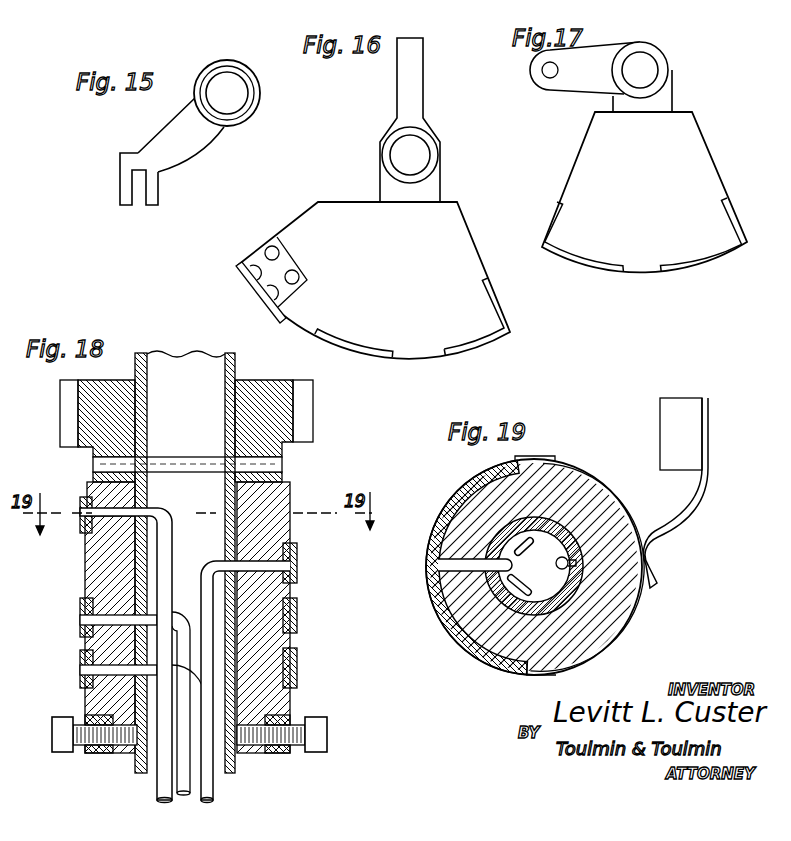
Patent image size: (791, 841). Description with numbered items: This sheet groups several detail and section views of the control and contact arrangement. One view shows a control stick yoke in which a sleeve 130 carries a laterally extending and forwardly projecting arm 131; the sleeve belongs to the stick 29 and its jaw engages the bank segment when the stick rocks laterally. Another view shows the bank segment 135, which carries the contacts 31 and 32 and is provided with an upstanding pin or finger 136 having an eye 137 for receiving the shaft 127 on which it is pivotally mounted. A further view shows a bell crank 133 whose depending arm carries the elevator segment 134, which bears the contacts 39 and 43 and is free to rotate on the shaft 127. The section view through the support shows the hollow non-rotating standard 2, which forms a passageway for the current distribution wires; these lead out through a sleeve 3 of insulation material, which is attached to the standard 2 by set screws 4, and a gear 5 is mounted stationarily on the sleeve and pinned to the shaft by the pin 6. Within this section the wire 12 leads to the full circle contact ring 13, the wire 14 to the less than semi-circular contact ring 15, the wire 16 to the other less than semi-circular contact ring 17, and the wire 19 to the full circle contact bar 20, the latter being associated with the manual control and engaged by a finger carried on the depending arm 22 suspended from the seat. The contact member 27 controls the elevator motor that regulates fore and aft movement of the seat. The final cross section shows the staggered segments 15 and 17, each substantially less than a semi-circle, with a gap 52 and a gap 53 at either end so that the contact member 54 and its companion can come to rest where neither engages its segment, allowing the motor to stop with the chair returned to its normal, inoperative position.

In FIG. 18, the standard 2 is at (150, 360).
In FIG. 19, the standard 2 is at (561, 594).
In FIG. 18, the sleeve 3 is at (280, 590).
In FIG. 19, the sleeve 3 is at (613, 604).
In FIG. 18, the set screws 4 is at (52, 735).
In FIG. 18, the gear 5 is at (305, 414).
In FIG. 18, the pin 6 is at (284, 464).
In FIG. 18, the wire 12 is at (80, 621).
In FIG. 19, the wire 12 is at (520, 548).
In FIG. 18, the full circle contact ring 13 is at (80, 605).
In FIG. 18, the wire 14 is at (216, 560).
In FIG. 19, the wire 14 is at (562, 563).
In FIG. 18, the less than semi-circular contact ring 15 is at (298, 564).
In FIG. 19, the less than semi-circular contact ring 15 is at (617, 645).
In FIG. 18, the wire 16 is at (156, 508).
In FIG. 19, the wire 16 is at (437, 566).
In FIG. 18, the less than semi-circular contact ring 17 is at (88, 496).
In FIG. 19, the less than semi-circular contact ring 17 is at (445, 541).
In FIG. 18, the wire 19 is at (80, 670).
In FIG. 19, the wire 19 is at (512, 565).
In FIG. 18, the full circle contact bar 20 is at (80, 688).
In FIG. 19, the depending arm 22 is at (696, 404).
In FIG. 16, the contact member 27 is at (278, 324).
In FIG. 15, the stick 29 is at (244, 93).
In FIG. 16, the contact 31 is at (383, 330).
In FIG. 16, the contact 32 is at (472, 345).
In FIG. 17, the contact 39 is at (588, 266).
In FIG. 17, the contact 43 is at (704, 259).
In FIG. 19, the gap 52 is at (545, 457).
In FIG. 19, the gap 53 is at (542, 678).
In FIG. 19, the contact member 54 is at (693, 515).
In FIG. 16, the shaft 127 is at (398, 159).
In FIG. 17, the shaft 127 is at (653, 68).
In FIG. 15, the sleeve 130 is at (256, 110).
In FIG. 15, the arm 131 is at (175, 138).
In FIG. 17, the bell crank 133 is at (584, 88).
In FIG. 17, the elevator segment 134 is at (692, 154).
In FIG. 16, the bank segment 135 is at (374, 280).
In FIG. 16, the upstanding pin 136 is at (412, 82).
In FIG. 16, the eye 137 is at (432, 155).